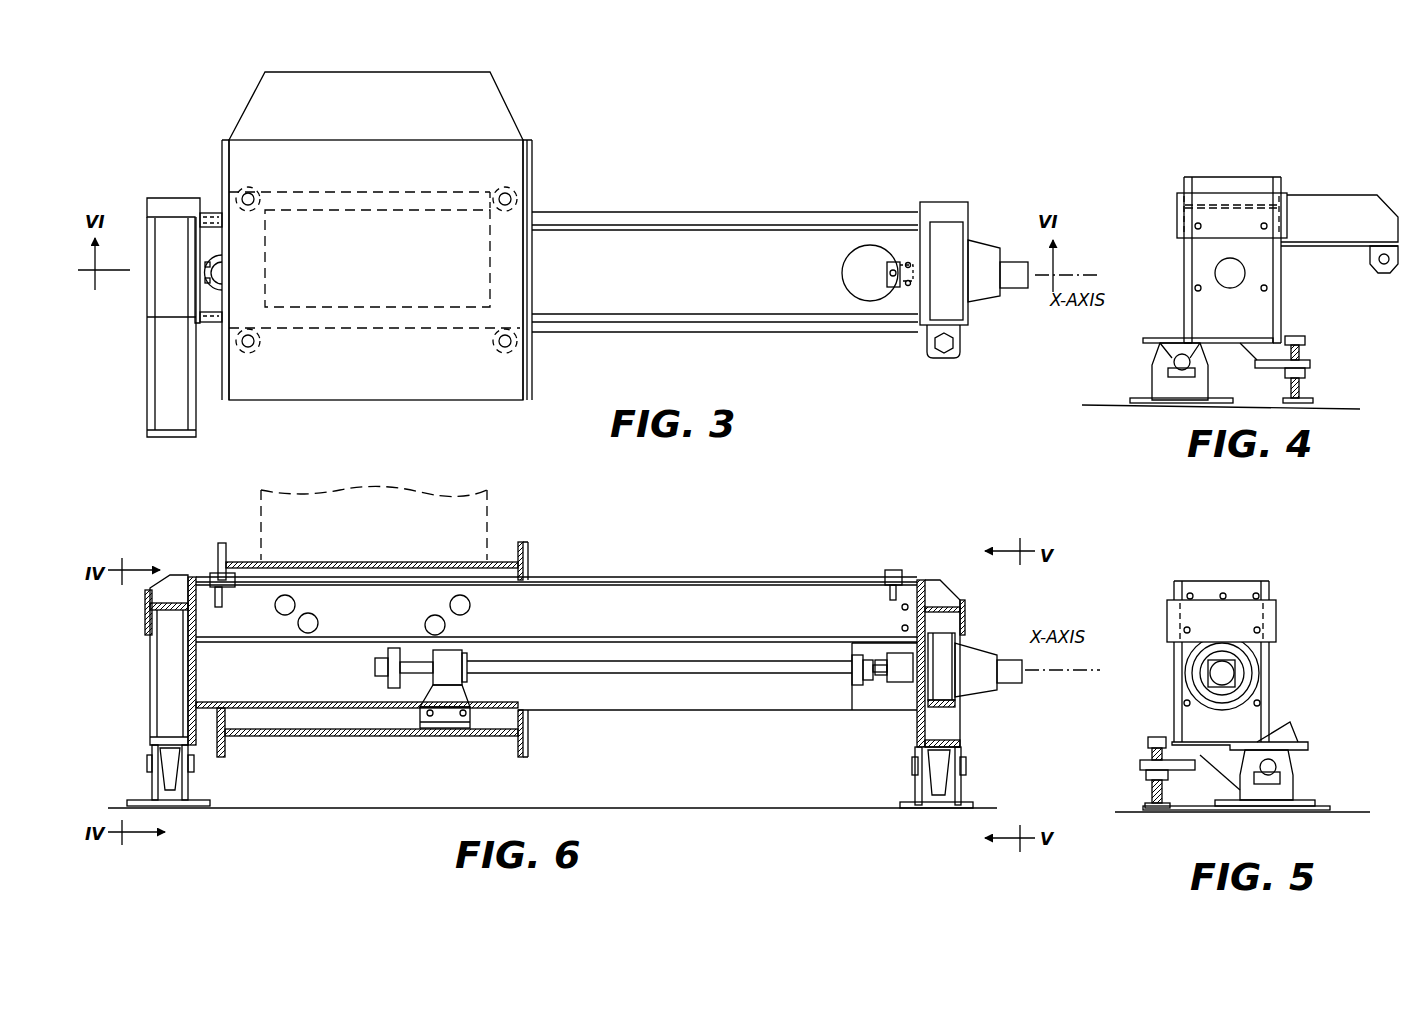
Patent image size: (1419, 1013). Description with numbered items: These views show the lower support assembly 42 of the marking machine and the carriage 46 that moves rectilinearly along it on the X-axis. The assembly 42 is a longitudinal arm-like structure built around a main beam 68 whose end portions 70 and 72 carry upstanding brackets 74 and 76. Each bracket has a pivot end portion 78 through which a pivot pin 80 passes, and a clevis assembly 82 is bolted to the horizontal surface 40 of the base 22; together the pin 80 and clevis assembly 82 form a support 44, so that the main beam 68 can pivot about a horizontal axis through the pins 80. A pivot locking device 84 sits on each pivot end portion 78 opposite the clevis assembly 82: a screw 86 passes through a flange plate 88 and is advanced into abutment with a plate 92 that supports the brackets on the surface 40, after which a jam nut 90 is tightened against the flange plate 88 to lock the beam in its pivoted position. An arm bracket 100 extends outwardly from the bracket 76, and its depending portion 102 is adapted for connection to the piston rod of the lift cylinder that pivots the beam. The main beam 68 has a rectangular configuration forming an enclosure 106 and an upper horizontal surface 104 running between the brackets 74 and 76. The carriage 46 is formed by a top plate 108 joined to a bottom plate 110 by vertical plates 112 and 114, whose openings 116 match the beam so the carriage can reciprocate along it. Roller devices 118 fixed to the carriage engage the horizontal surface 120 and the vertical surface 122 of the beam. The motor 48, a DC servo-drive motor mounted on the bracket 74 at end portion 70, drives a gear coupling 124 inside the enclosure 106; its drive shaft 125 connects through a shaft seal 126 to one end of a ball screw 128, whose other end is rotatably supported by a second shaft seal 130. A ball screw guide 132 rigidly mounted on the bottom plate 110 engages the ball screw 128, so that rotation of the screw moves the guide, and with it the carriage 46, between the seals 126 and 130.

In FIG. 6, the base 22 is at (668, 808).
In FIG. 4, the horizontal surface 40 is at (1338, 407).
In FIG. 5, the horizontal surface 40 is at (1345, 813).
In FIG. 6, the horizontal surface 40 is at (510, 808).
In FIG. 3, the lower support assembly 42 is at (720, 186).
In FIG. 4, the lower support assembly 42 is at (1198, 162).
In FIG. 5, the lower support assembly 42 is at (1153, 608).
In FIG. 6, the lower support assembly 42 is at (746, 550).
In FIG. 4, the support 44 is at (1140, 378).
In FIG. 5, the support 44 is at (1308, 777).
In FIG. 6, the support 44 is at (975, 766).
In FIG. 3, the carriage 46 is at (540, 140).
In FIG. 3, the motor 48 is at (978, 304).
In FIG. 5, the motor 48 is at (1190, 670).
In FIG. 6, the motor 48 is at (975, 700).
In FIG. 3, the main beam 68 is at (640, 318).
In FIG. 6, the main beam 68 is at (628, 580).
In FIG. 3, the end portion 70 is at (882, 310).
In FIG. 6, the end portion 70 is at (848, 578).
In FIG. 3, the end portion 72 is at (207, 240).
In FIG. 6, the end portion 72 is at (206, 575).
In FIG. 3, the upstanding bracket 74 is at (972, 206).
In FIG. 5, the upstanding bracket 74 is at (1272, 650).
In FIG. 6, the upstanding bracket 74 is at (966, 615).
In FIG. 3, the upstanding bracket 76 is at (150, 232).
In FIG. 4, the upstanding bracket 76 is at (1184, 254).
In FIG. 6, the upstanding bracket 76 is at (150, 710).
In FIG. 4, the pivot end portion 78 is at (1197, 338).
In FIG. 5, the pivot end portion 78 is at (1258, 742).
In FIG. 6, the pivot end portion 78 is at (935, 782).
In FIG. 4, the pivot pin 80 is at (1167, 360).
In FIG. 5, the pivot pin 80 is at (1278, 768).
In FIG. 6, the pivot pin 80 is at (915, 765).
In FIG. 4, the clevis assembly 82 is at (1145, 398).
In FIG. 5, the clevis assembly 82 is at (1285, 800).
In FIG. 6, the clevis assembly 82 is at (962, 802).
In FIG. 4, the pivot locking device 84 is at (1325, 350).
In FIG. 5, the pivot locking device 84 is at (1134, 752).
In FIG. 4, the screw 86 is at (1297, 335).
In FIG. 5, the screw 86 is at (1157, 735).
In FIG. 4, the flange plate 88 is at (1312, 364).
In FIG. 5, the flange plate 88 is at (1140, 766).
In FIG. 4, the jam nut 90 is at (1308, 374).
In FIG. 5, the jam nut 90 is at (1148, 775).
In FIG. 4, the plate 92 is at (1250, 400).
In FIG. 5, the plate 92 is at (1193, 812).
In FIG. 3, the arm bracket 100 is at (168, 425).
In FIG. 4, the arm bracket 100 is at (1338, 198).
In FIG. 6, the arm bracket 100 is at (145, 612).
In FIG. 4, the depending portion 102 is at (1370, 257).
In FIG. 3, the upper horizontal surface 104 is at (728, 318).
In FIG. 6, the upper horizontal surface 104 is at (694, 580).
In FIG. 6, the enclosure 106 is at (604, 696).
In FIG. 3, the top plate 108 is at (522, 398).
In FIG. 6, the top plate 108 is at (252, 560).
In FIG. 6, the bottom plate 110 is at (295, 737).
In FIG. 3, the vertical plate 112 is at (533, 383).
In FIG. 6, the vertical plate 112 is at (529, 718).
In FIG. 3, the vertical plate 114 is at (222, 150).
In FIG. 6, the vertical plate 114 is at (204, 708).
In FIG. 6, the opening 116 is at (224, 706).
In FIG. 3, the roller device 118 is at (256, 188).
In FIG. 6, the roller device 118 is at (296, 604).
In FIG. 6, the surface 120 is at (383, 636).
In FIG. 3, the surface 122 is at (388, 325).
In FIG. 6, the surface 122 is at (272, 640).
In FIG. 6, the gear coupling 124 is at (897, 658).
In FIG. 6, the drive shaft 125 is at (880, 678).
In FIG. 6, the shaft seal 126 is at (856, 674).
In FIG. 6, the ball screw 128 is at (693, 668).
In FIG. 6, the second shaft seal 130 is at (376, 675).
In FIG. 6, the ball screw guide 132 is at (443, 718).